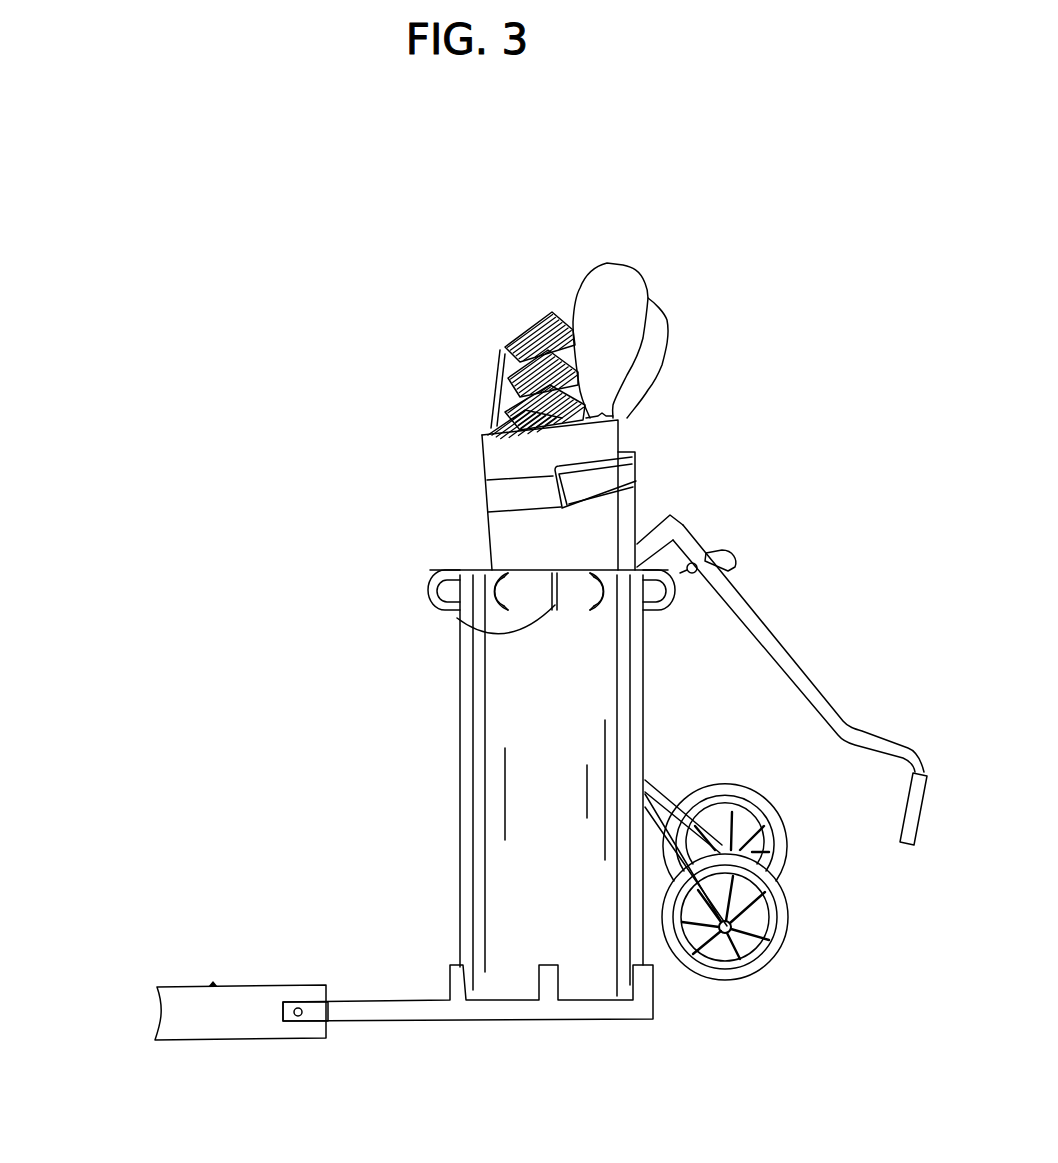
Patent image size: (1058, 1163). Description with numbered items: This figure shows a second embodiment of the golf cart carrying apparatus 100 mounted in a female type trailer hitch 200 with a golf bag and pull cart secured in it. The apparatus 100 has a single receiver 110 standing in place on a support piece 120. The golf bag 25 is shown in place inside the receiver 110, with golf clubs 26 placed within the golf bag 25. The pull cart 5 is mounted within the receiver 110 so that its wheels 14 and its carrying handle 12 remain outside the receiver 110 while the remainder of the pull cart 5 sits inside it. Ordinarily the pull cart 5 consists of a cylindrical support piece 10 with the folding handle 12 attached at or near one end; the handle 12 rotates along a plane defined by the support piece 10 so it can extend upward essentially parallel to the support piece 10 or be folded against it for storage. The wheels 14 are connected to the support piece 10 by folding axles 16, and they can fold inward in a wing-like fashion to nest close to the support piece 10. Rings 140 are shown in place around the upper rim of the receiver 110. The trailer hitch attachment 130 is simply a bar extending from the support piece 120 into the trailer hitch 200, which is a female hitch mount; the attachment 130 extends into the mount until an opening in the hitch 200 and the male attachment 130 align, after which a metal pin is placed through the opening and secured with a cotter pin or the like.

The pull cart 5 is at (733, 476).
The support piece 10 is at (633, 505).
The folding handle 12 is at (753, 620).
The wheels 14 is at (787, 852).
The folding axles 16 is at (668, 832).
The golf bag 25 is at (478, 508).
The golf clubs 26 is at (537, 280).
The golf cart carrying apparatus 100 is at (358, 852).
The receiver 110 is at (460, 732).
The support piece 120 is at (587, 1020).
The trailer hitch attachment 130 is at (340, 1015).
The rings 140 is at (438, 585).
The trailer hitch 200 is at (150, 963).